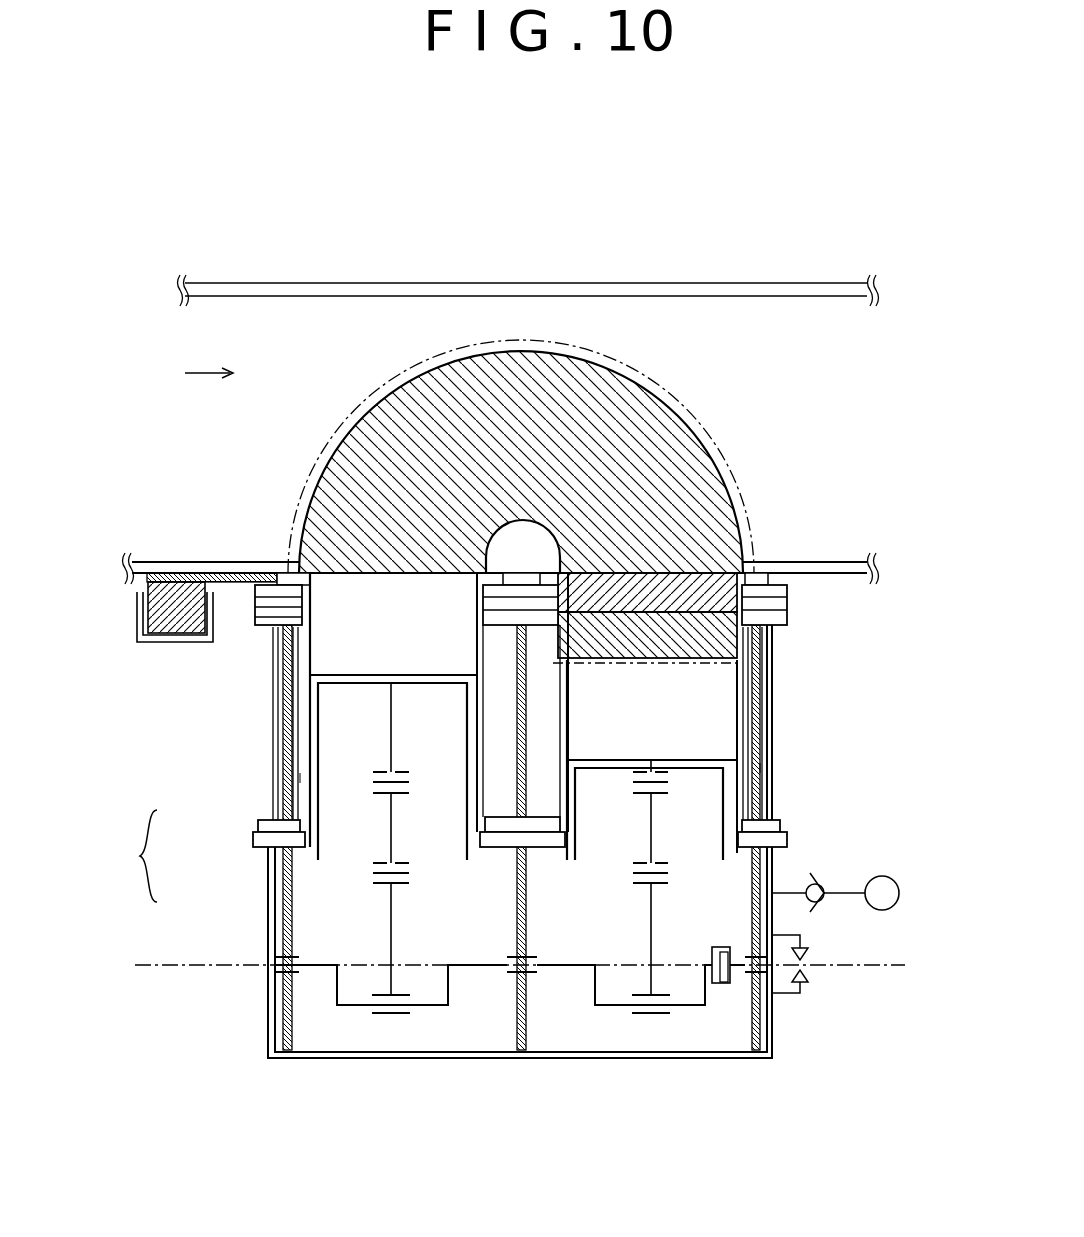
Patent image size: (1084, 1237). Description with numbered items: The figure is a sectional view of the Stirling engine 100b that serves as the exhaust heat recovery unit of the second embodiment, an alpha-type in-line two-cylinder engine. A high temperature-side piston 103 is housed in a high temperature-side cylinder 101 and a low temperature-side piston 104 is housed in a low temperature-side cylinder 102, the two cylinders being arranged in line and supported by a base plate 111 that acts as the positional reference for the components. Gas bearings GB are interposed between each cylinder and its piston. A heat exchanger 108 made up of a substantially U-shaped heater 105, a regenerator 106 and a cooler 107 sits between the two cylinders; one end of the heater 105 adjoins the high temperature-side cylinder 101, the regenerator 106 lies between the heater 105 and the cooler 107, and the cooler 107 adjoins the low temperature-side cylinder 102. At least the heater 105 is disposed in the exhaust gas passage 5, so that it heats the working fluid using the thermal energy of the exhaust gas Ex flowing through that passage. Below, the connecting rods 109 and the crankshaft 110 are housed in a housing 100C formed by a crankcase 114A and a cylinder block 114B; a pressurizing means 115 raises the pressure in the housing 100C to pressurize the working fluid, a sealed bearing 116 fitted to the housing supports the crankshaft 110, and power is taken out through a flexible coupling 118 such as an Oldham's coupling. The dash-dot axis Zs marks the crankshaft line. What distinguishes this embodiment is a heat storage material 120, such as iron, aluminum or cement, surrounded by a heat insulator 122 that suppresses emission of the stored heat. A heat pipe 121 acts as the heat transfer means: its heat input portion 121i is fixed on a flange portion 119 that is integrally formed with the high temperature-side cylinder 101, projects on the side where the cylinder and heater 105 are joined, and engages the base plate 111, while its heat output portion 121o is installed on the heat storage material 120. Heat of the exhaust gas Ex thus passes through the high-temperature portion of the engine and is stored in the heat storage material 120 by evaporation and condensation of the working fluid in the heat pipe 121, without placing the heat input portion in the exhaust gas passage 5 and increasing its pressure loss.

The exhaust gas passage 5 is at (353, 292).
The heater 105 is at (620, 385).
The heat exchanger 108 is at (692, 411).
The regenerator 106 is at (718, 593).
The cooler 107 is at (720, 646).
The heat pipe 121 is at (217, 573).
The heat input portion 121i is at (260, 573).
The heat output portion 121o is at (157, 580).
The flange portion 119 is at (284, 582).
The heat storage material 120 is at (167, 617).
The heat insulator 122 is at (137, 613).
The base plate 111 is at (267, 620).
The high temperature-side cylinder 101 is at (307, 700).
The high temperature-side piston 103 is at (316, 738).
The low temperature-side cylinder 102 is at (738, 707).
The low temperature-side piston 104 is at (728, 802).
The gas bearing GB is at (300, 778).
The crankcase 114A is at (272, 908).
The cylinder block 114B is at (273, 794).
The housing 100C is at (110, 856).
The connecting rod 109 is at (393, 912).
The crankshaft 110 is at (563, 968).
The flexible coupling 118 is at (722, 985).
The pressurizing means 115 is at (888, 876).
The sealed bearing 116 is at (805, 977).
The Stirling engine 100b is at (815, 1050).
The oil level axis Zs is at (540, 965).
The exhaust gas Ex is at (187, 373).